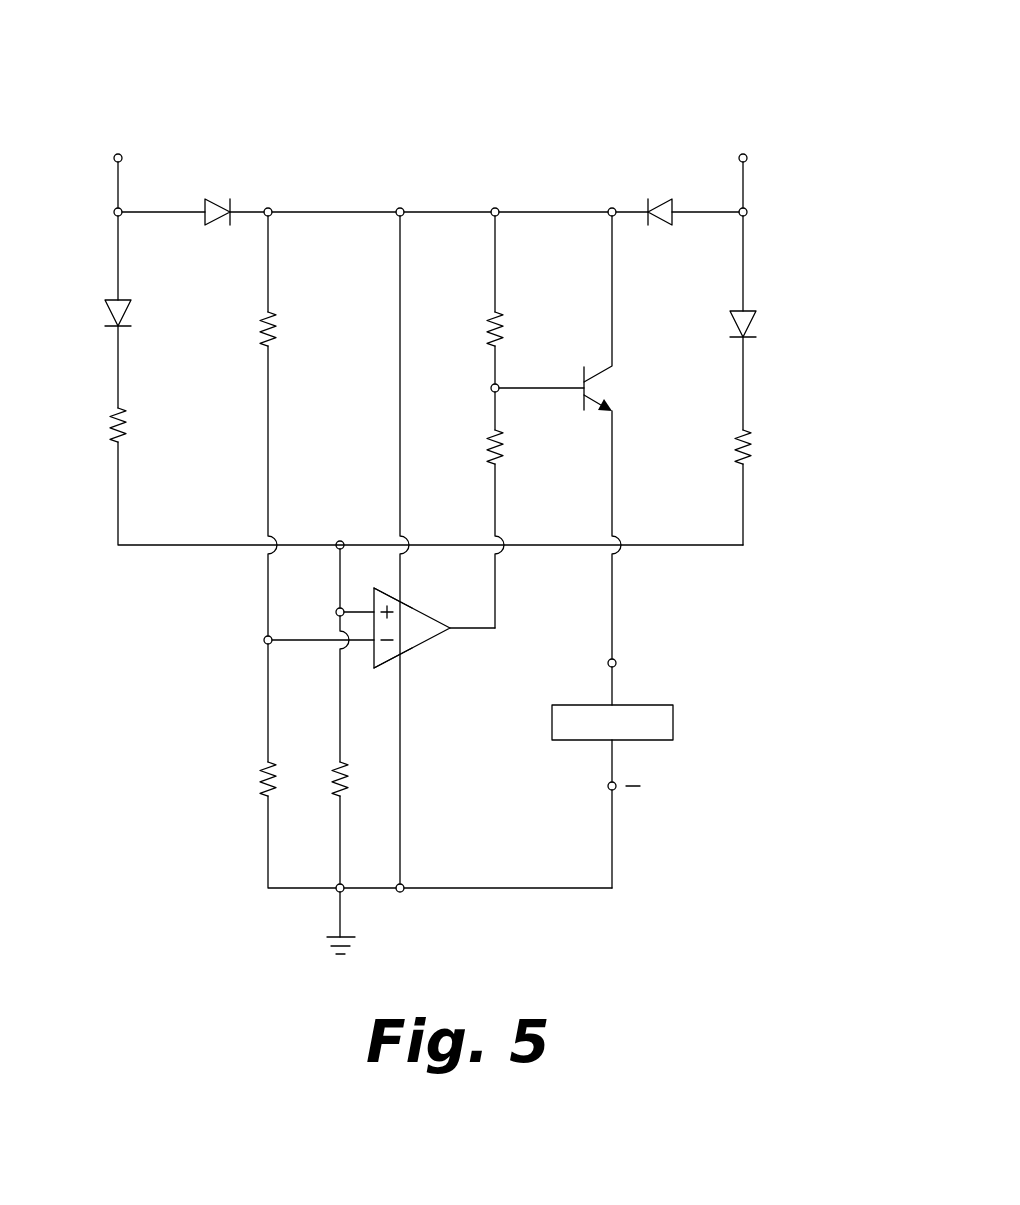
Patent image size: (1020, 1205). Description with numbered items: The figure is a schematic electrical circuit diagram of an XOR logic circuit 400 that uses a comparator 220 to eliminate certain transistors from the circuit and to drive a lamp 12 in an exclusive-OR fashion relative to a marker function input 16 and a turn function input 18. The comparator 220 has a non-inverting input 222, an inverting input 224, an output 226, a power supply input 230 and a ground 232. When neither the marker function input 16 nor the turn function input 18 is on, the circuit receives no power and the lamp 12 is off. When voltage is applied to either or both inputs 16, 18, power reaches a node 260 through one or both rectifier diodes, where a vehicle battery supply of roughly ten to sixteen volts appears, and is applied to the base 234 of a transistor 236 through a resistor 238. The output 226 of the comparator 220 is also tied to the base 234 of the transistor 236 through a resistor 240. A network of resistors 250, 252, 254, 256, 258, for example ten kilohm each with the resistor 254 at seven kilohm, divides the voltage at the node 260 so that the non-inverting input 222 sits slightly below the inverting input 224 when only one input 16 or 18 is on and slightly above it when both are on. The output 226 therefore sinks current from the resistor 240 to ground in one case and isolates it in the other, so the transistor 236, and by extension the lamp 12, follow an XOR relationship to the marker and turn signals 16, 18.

The lamp 12 is at (673, 718).
The marker function input 16 is at (743, 197).
The turn function input 18 is at (118, 181).
The comparator 220 is at (418, 648).
The non-inverting input 222 is at (370, 609).
The inverting input 224 is at (372, 644).
The output 226 is at (450, 628).
The power supply input 230 is at (408, 598).
The ground 232 is at (404, 657).
The base 234 is at (546, 386).
The transistor 236 is at (623, 406).
The resistor 238 is at (498, 320).
The resistor 240 is at (487, 449).
The resistor 250 is at (118, 418).
The resistor 252 is at (737, 430).
The resistor 254 is at (338, 787).
The resistor 256 is at (272, 322).
The resistor 258 is at (262, 785).
The node 260 is at (441, 212).
The XOR logic circuit 400 is at (626, 84).